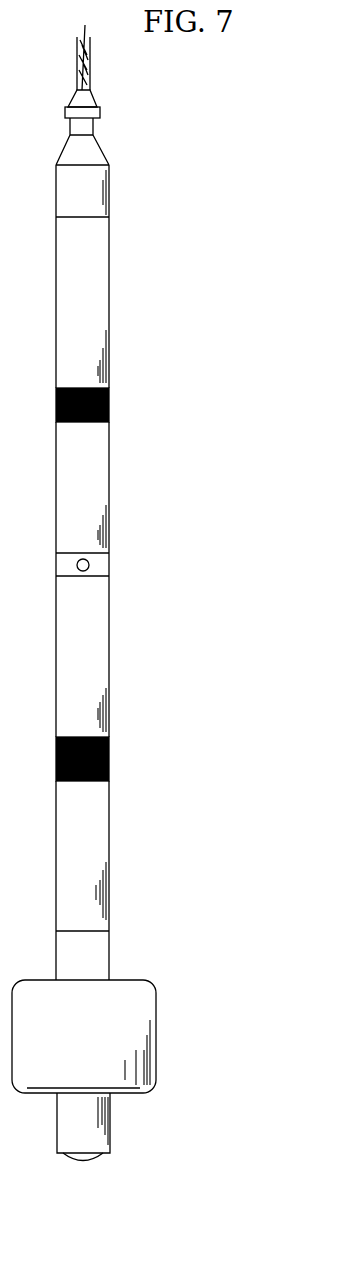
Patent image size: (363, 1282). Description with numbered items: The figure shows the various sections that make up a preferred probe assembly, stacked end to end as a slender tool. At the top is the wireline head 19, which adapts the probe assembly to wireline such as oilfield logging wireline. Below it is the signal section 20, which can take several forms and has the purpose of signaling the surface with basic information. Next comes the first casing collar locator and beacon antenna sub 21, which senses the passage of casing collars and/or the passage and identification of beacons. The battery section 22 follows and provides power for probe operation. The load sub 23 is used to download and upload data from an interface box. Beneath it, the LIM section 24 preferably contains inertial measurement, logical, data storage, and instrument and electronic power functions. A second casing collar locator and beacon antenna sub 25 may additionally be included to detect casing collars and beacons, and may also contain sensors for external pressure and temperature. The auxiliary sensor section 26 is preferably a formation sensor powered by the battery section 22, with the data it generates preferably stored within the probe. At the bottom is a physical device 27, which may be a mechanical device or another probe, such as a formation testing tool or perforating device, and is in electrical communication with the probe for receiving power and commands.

The wireline head 19 is at (109, 180).
The signal section 20 is at (109, 281).
The first casing collar locator and beacon antenna sub 21 is at (109, 403).
The battery section 22 is at (109, 509).
The load sub 23 is at (109, 564).
The LIM section 24 is at (109, 667).
The second casing collar locator and beacon antenna sub 25 is at (109, 748).
The auxiliary sensor section 26 is at (109, 860).
The physical device 27 is at (156, 1010).